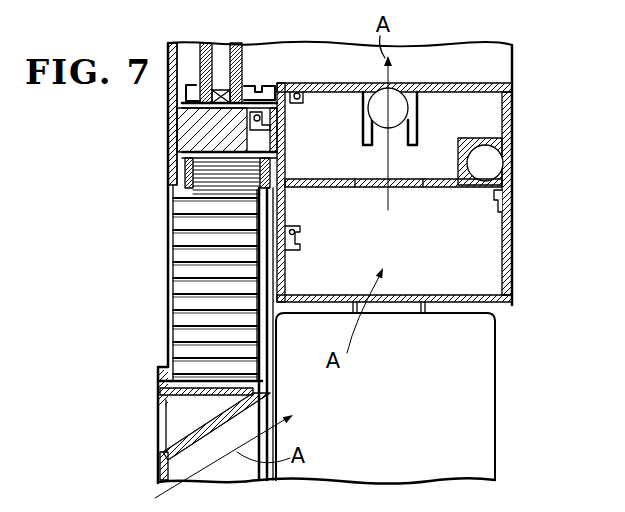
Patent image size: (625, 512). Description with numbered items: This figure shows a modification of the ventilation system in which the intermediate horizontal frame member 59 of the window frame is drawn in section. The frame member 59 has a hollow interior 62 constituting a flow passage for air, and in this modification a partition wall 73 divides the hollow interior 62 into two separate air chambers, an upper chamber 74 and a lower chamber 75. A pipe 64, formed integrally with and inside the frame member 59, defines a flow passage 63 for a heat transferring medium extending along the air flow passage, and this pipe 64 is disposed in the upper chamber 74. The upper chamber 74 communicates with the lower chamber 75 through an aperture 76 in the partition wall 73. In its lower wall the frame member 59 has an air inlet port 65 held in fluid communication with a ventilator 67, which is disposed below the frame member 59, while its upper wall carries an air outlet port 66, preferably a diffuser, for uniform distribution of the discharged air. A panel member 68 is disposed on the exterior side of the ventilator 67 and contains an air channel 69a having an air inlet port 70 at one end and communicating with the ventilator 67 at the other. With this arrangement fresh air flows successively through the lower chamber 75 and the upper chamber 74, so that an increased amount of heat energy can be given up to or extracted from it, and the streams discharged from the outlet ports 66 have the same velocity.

The intermediate horizontal frame member 59 is at (525, 76).
The hollow interior 62 is at (321, 104).
The flow passage for heat transferring medium 63 is at (490, 163).
The pipe 64 is at (467, 155).
The air inlet port 65 is at (405, 300).
The air outlet port 66 is at (398, 102).
The ventilator 67 is at (486, 376).
The panel member 68 is at (182, 268).
The air channel 69a is at (197, 450).
The air inlet port 70 is at (158, 480).
The partition wall 73 is at (435, 187).
The upper air chamber 74 is at (452, 105).
The lower air chamber 75 is at (477, 252).
The aperture 76 is at (362, 188).